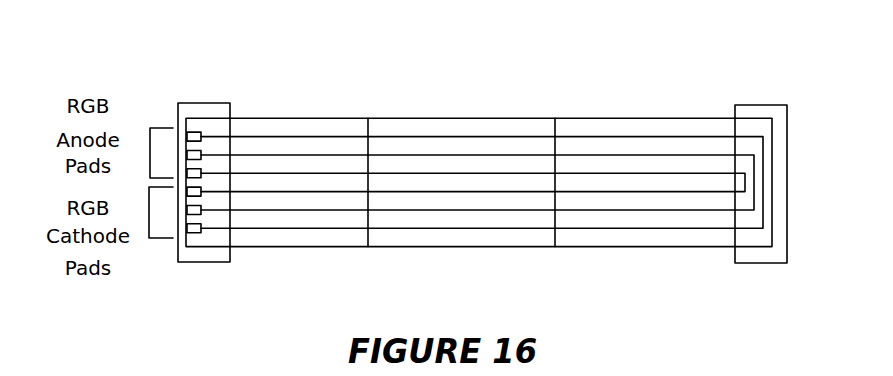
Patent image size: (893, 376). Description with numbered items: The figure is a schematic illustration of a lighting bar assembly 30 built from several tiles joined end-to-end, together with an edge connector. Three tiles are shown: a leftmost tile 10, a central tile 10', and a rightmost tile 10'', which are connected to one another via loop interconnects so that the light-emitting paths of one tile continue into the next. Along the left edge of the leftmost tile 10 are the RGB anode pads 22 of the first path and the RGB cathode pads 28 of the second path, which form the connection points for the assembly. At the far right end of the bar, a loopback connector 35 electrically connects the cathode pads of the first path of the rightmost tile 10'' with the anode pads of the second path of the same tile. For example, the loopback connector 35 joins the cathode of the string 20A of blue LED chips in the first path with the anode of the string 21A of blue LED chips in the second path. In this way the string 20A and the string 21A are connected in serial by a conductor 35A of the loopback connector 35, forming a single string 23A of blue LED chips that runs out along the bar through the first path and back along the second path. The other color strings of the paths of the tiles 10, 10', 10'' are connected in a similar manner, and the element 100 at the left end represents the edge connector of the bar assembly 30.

The tile 10 is at (479, 153).
The central tile 10' is at (457, 154).
The rightmost tile 10'' is at (645, 154).
The string of blue LED chips of the first path 20A is at (397, 118).
The string of blue LED chips of the second path 21A is at (437, 228).
The single string of blue LED chips 23A is at (583, 118).
The anode pads 22 is at (148, 153).
The cathode pads 28 is at (148, 213).
The bar assembly 30 is at (700, 268).
The loopback connector 35 is at (787, 128).
The conductor 35A is at (770, 193).
The connector 100 is at (205, 104).